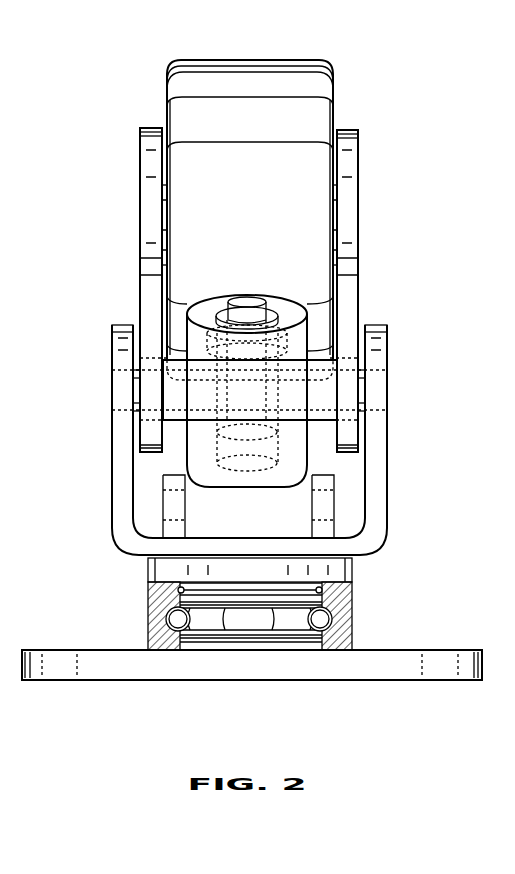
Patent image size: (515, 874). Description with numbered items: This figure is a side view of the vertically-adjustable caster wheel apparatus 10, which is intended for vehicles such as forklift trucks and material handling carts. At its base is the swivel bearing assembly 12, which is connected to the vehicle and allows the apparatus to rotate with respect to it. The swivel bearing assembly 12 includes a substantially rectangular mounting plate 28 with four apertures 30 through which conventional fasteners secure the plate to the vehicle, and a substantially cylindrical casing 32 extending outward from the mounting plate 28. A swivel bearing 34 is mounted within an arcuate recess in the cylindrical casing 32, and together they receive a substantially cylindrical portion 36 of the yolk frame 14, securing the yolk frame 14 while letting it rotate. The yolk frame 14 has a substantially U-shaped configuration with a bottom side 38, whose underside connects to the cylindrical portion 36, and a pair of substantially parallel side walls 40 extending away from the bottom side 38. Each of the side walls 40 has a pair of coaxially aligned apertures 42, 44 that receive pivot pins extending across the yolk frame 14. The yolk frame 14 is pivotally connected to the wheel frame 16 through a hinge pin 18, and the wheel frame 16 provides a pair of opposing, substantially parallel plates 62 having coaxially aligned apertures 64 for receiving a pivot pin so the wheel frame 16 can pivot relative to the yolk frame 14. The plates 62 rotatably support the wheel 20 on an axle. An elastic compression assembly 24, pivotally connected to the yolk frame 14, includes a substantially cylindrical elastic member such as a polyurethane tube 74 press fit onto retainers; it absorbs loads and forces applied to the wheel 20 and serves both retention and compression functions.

The caster wheel apparatus 10 is at (105, 138).
The swivel bearing assembly 12 is at (380, 638).
The yolk frame 14 is at (112, 470).
The wheel frame 16 is at (140, 176).
The hinge pin 18 is at (362, 386).
The wheel 20 is at (322, 66).
The elastic compression assembly 24 is at (330, 463).
The mounting plate 28 is at (22, 663).
The apertures 30 is at (47, 665).
The cylindrical casing 32 is at (148, 640).
The swivel bearing 34 is at (170, 617).
The cylindrical portion 36 is at (148, 572).
The bottom side 38 is at (307, 572).
The side walls 40 is at (112, 332).
The apertures 42 is at (170, 490).
The apertures 44 is at (124, 412).
The plates 62 is at (150, 128).
The apertures 64 is at (343, 372).
The polyurethane tube 74 is at (293, 332).